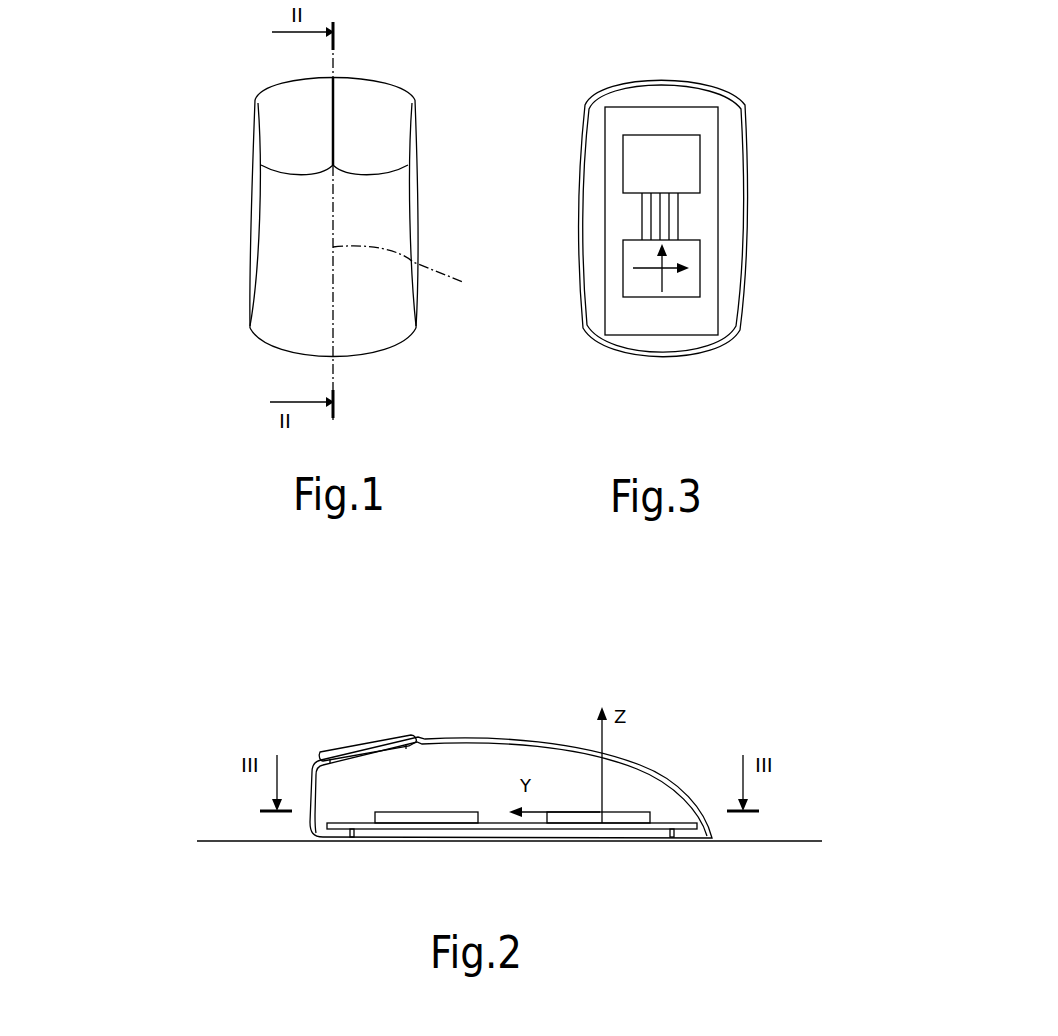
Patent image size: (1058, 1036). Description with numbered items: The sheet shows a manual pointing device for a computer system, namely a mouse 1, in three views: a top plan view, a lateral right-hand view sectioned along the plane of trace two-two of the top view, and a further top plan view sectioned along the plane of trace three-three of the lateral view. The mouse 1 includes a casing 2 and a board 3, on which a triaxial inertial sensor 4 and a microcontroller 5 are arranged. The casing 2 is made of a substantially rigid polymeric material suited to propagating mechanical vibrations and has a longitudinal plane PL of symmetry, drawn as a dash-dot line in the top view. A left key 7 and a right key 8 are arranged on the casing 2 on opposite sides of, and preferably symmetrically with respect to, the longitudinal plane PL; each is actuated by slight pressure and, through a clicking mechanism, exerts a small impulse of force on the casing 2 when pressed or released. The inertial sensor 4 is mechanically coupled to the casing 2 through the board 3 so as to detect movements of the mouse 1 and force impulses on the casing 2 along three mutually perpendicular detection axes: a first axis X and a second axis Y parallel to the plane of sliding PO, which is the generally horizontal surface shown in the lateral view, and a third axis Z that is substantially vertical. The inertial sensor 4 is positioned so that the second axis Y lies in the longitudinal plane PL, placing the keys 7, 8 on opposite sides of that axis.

In FIG. 1, the mouse 1 is at (444, 80).
In FIG. 3, the mouse 1 is at (771, 88).
In FIG. 2, the mouse 1 is at (731, 703).
In FIG. 1, the casing 2 is at (270, 287).
In FIG. 3, the casing 2 is at (744, 116).
In FIG. 2, the casing 2 is at (483, 738).
In FIG. 3, the board 3 is at (612, 202).
In FIG. 2, the board 3 is at (503, 829).
In FIG. 3, the triaxial inertial sensor 4 is at (690, 253).
In FIG. 2, the triaxial inertial sensor 4 is at (619, 817).
In FIG. 3, the microcontroller 5 is at (681, 140).
In FIG. 2, the microcontroller 5 is at (438, 812).
In FIG. 1, the left key 7 is at (265, 126).
In FIG. 1, the right key 8 is at (400, 127).
In FIG. 2, the right key 8 is at (364, 744).
In FIG. 1, the longitudinal plane of symmetry PL is at (413, 271).
In FIG. 2, the plane of sliding PO is at (793, 840).